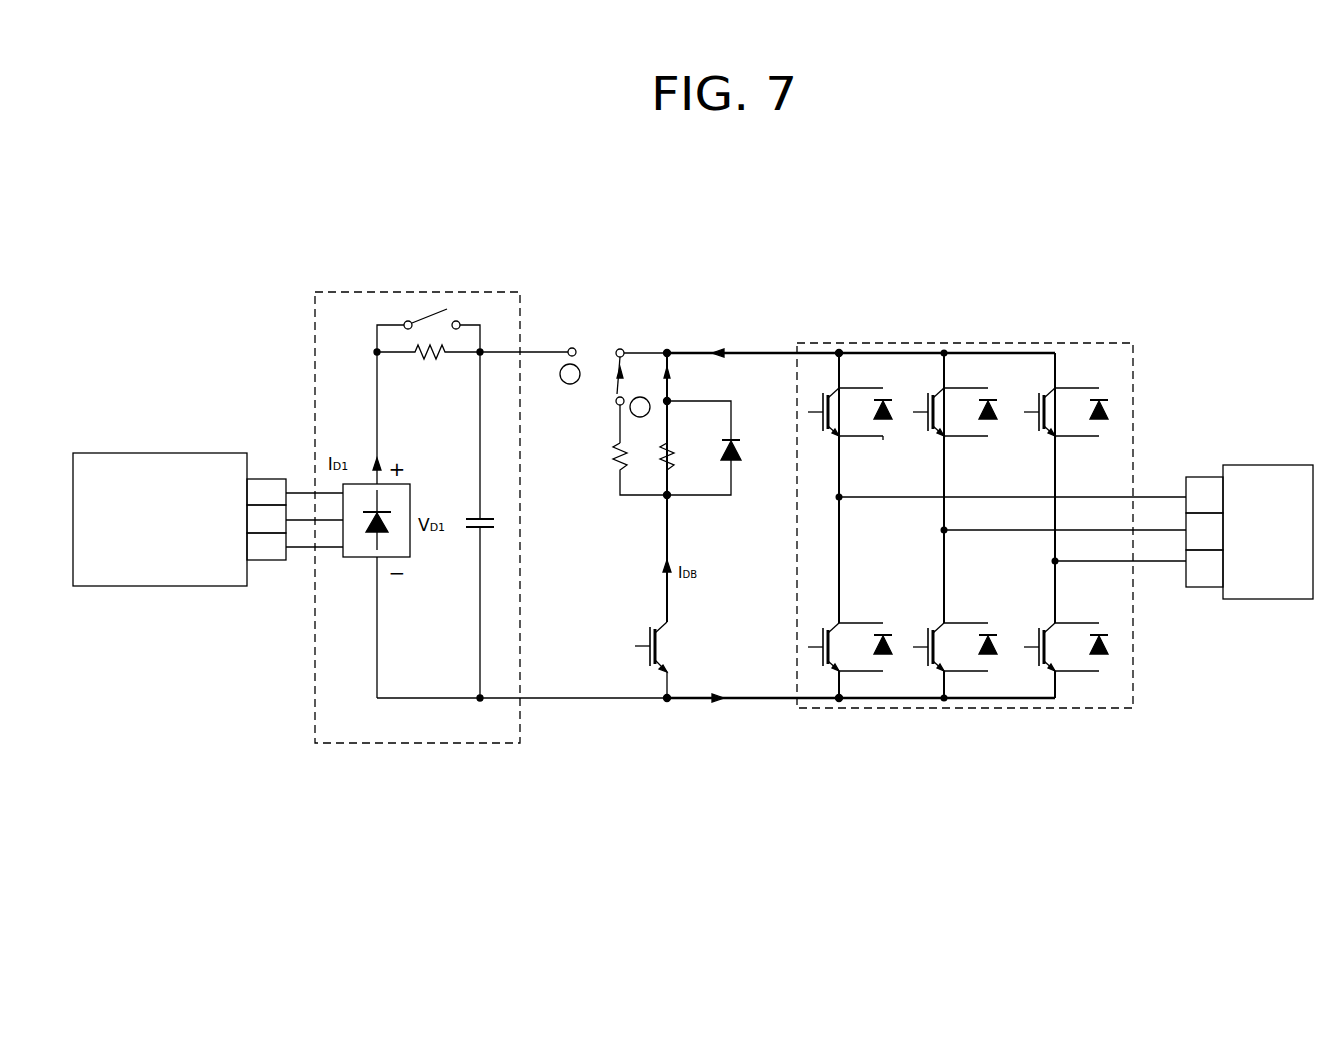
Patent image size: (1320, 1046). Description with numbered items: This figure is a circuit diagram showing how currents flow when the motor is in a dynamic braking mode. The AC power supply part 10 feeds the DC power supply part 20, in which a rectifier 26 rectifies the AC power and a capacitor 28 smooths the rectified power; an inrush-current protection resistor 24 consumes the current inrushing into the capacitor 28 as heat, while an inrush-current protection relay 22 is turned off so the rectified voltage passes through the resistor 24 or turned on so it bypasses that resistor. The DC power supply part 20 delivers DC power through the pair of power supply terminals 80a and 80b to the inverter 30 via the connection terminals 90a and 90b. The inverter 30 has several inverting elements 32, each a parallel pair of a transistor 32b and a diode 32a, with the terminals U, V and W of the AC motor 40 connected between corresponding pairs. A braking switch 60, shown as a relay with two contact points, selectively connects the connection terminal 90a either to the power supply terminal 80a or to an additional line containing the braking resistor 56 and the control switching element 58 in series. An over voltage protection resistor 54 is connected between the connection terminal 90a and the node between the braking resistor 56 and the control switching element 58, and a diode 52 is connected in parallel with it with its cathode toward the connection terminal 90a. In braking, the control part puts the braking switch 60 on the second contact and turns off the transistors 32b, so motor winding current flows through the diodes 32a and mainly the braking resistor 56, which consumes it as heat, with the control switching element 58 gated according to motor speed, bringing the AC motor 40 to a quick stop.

The AC power supply part 10 is at (162, 453).
The DC power supply part 20 is at (445, 745).
The inrush-current protection relay 22 is at (428, 310).
The inrush-current protection resistor 24 is at (478, 345).
The rectifier 26 is at (352, 547).
The capacitor 28 is at (474, 528).
The inverter 30 is at (973, 343).
The inverting elements 32 is at (865, 453).
The diode 32a is at (886, 432).
The transistor 32b is at (841, 440).
The AC motor 40 is at (1263, 465).
The diode 52 is at (735, 480).
The over voltage protection resistor 54 is at (676, 478).
The braking resistor 56 is at (616, 478).
The control switching element 58 is at (672, 675).
The braking switch 60 is at (642, 360).
The power supply terminal 80a is at (446, 350).
The power supply terminal 80b is at (483, 702).
The connection terminal 90a is at (839, 353).
The connection terminal 90b is at (841, 702).